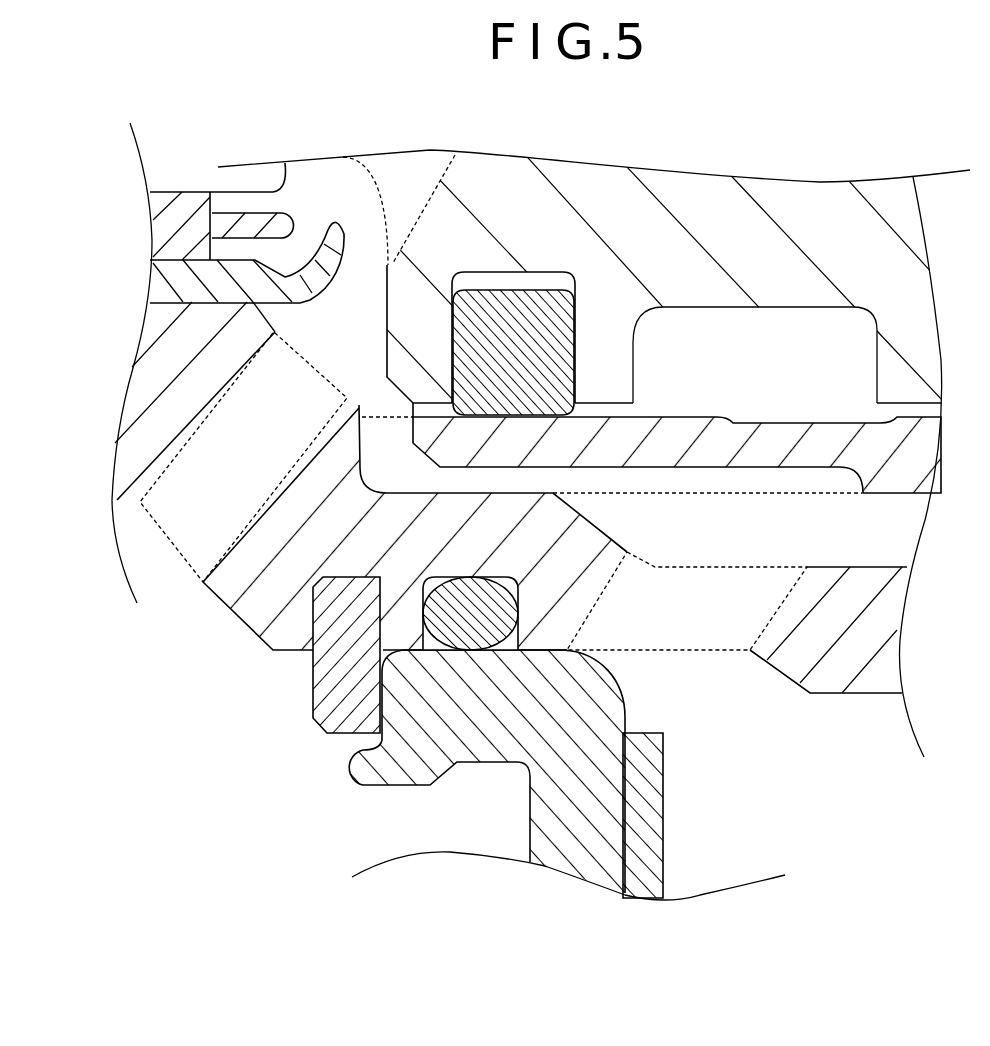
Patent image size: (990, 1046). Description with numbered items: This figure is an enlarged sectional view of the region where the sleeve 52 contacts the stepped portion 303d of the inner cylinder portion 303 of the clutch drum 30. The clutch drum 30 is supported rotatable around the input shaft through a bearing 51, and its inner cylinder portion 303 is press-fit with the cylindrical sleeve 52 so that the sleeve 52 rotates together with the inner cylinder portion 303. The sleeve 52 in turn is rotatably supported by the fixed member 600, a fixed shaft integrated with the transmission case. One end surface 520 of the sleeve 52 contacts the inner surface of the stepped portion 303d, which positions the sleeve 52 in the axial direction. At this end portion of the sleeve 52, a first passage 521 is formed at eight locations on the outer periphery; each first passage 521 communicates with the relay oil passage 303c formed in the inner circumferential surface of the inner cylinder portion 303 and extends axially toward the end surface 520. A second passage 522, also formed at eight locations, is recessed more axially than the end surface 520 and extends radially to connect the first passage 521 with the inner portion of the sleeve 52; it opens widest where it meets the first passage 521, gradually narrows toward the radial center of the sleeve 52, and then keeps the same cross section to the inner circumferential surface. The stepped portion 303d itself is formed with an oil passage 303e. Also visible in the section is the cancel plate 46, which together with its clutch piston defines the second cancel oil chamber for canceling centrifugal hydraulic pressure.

The clutch drum 30 is at (267, 668).
The cancel plate 46 is at (472, 706).
The bearing 51 is at (193, 228).
The sleeve 52 is at (800, 447).
The inner cylinder portion 303 is at (865, 655).
The relay oil passage 303c is at (885, 495).
The stepped portion 303d is at (253, 575).
The oil passage 303e is at (140, 505).
The end surface 520 is at (360, 408).
The first passage 521 is at (597, 467).
The second passage 522 is at (412, 403).
The fixed member 600 is at (730, 307).